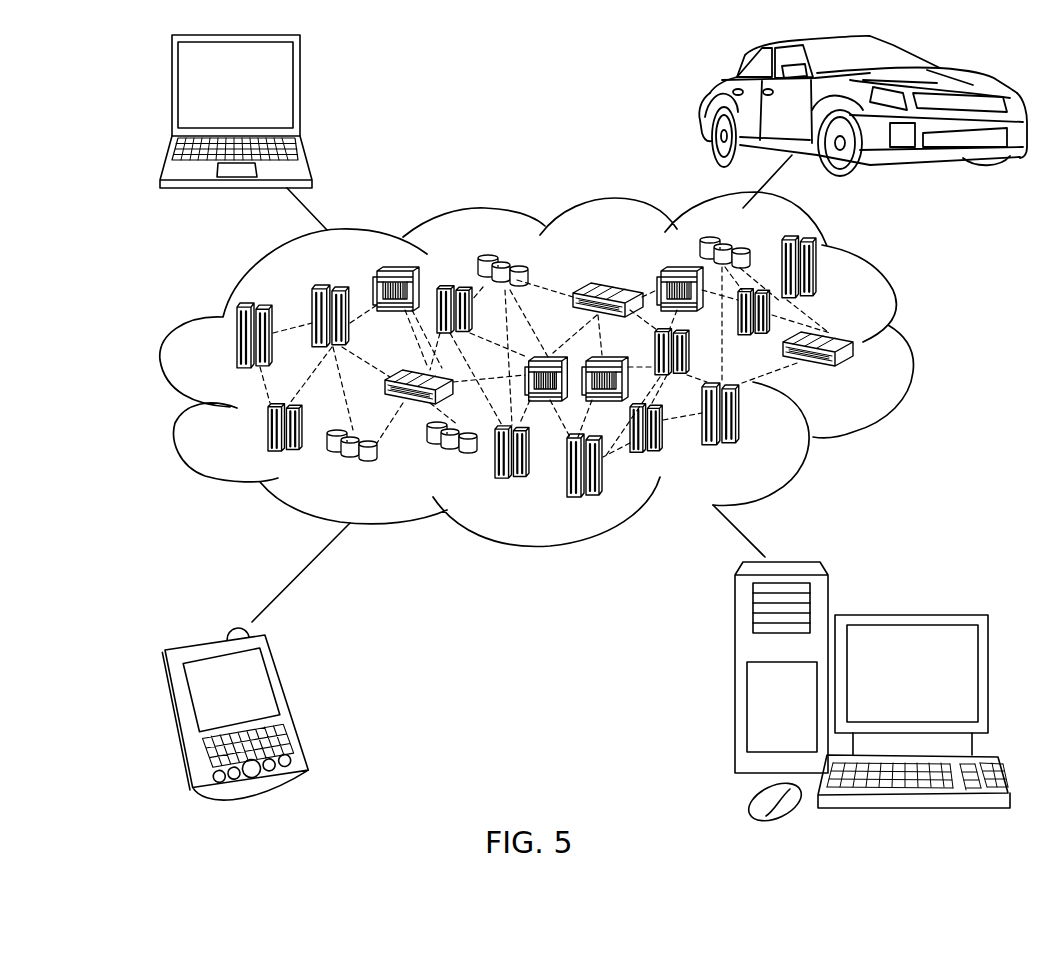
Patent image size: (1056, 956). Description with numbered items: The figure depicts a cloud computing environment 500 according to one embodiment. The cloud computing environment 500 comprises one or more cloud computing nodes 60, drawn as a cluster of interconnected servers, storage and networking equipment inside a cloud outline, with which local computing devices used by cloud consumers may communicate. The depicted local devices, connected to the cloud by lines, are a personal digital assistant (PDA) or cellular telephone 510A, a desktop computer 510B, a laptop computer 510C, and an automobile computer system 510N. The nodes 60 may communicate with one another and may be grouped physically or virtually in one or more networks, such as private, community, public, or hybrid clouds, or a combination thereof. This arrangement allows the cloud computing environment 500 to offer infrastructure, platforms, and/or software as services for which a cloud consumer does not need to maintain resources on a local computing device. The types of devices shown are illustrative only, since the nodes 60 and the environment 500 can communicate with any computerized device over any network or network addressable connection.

The cloud computing environment 500 is at (912, 345).
The cloud computing nodes 60 is at (853, 374).
The personal digital assistant (PDA) or cellular telephone 510A is at (290, 702).
The desktop computer 510B is at (910, 615).
The laptop computer 510C is at (300, 94).
The automobile computer system 510N is at (707, 108).